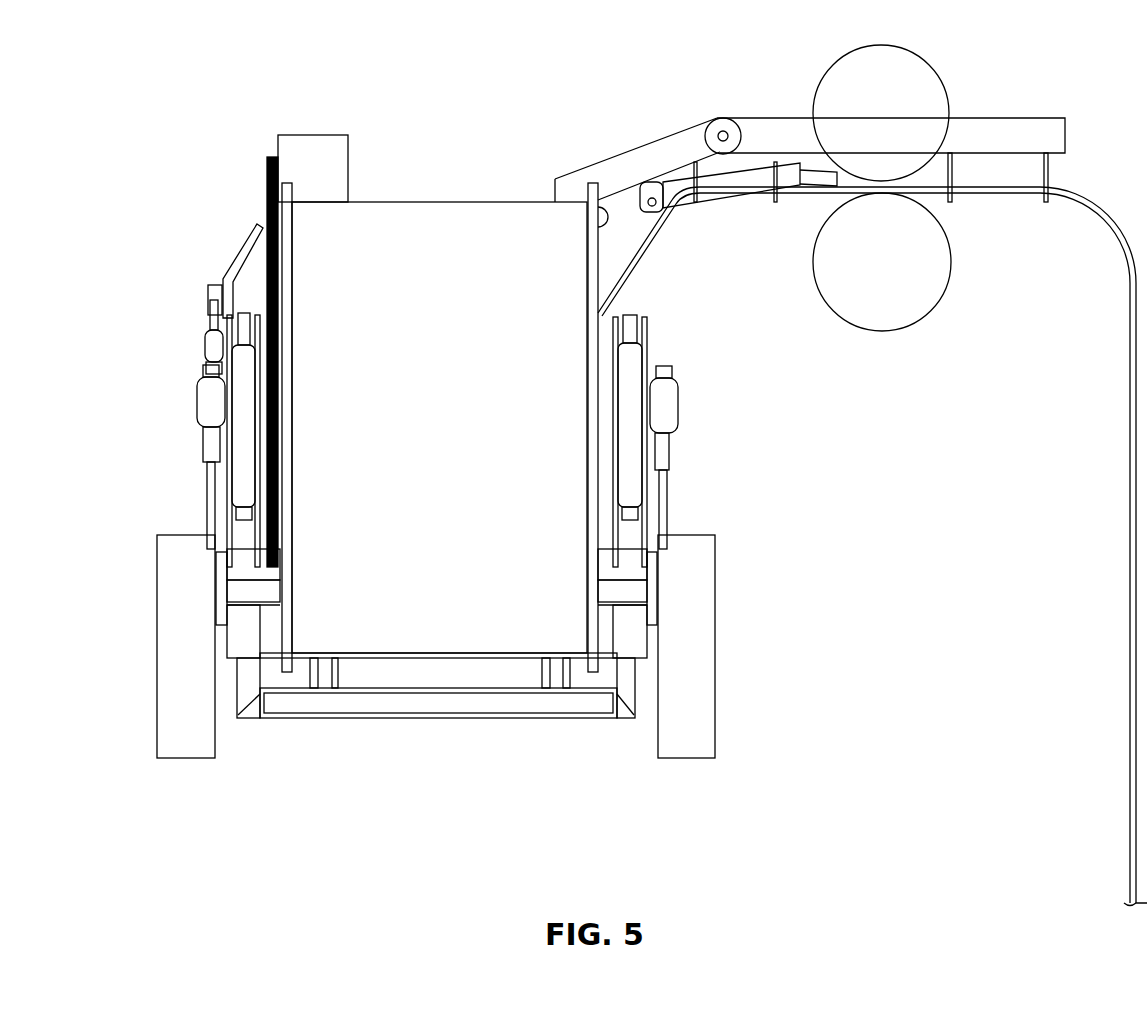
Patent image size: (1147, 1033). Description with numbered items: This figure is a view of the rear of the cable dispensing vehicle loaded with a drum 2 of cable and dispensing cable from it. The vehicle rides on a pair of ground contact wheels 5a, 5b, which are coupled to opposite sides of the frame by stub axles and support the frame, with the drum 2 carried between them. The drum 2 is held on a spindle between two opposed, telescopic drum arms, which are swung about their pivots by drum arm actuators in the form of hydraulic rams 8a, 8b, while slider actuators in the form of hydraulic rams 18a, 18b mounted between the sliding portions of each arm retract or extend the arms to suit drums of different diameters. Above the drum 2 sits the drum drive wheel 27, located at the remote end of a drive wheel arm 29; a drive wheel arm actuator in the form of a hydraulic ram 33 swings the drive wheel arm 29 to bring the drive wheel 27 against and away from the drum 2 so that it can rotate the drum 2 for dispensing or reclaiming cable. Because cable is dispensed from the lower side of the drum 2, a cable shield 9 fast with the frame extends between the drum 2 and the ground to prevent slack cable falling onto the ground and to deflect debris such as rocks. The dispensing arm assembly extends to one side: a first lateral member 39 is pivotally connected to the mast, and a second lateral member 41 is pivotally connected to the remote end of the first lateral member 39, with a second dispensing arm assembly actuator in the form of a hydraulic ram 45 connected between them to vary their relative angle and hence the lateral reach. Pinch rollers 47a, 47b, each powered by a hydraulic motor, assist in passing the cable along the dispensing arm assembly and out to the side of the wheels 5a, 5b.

The drum 2 is at (448, 441).
The drum drive wheel 27 is at (300, 135).
The drive wheel arm 29 is at (233, 262).
The drive wheel arm actuator 33 is at (213, 348).
The drum arm actuator 8b is at (205, 408).
The slider actuator 18b is at (243, 447).
The slider actuator 18a is at (632, 388).
The drum arm actuator 8a is at (668, 415).
The ground contact wheel 5a is at (705, 638).
The ground contact wheel 5b is at (165, 687).
The cable shield 9 is at (400, 665).
The first lateral member 39 is at (633, 150).
The second lateral member 41 is at (1022, 118).
The second dispensing arm assembly actuator 45 is at (720, 205).
The pinch roller 47a is at (925, 63).
The pinch roller 47b is at (945, 228).